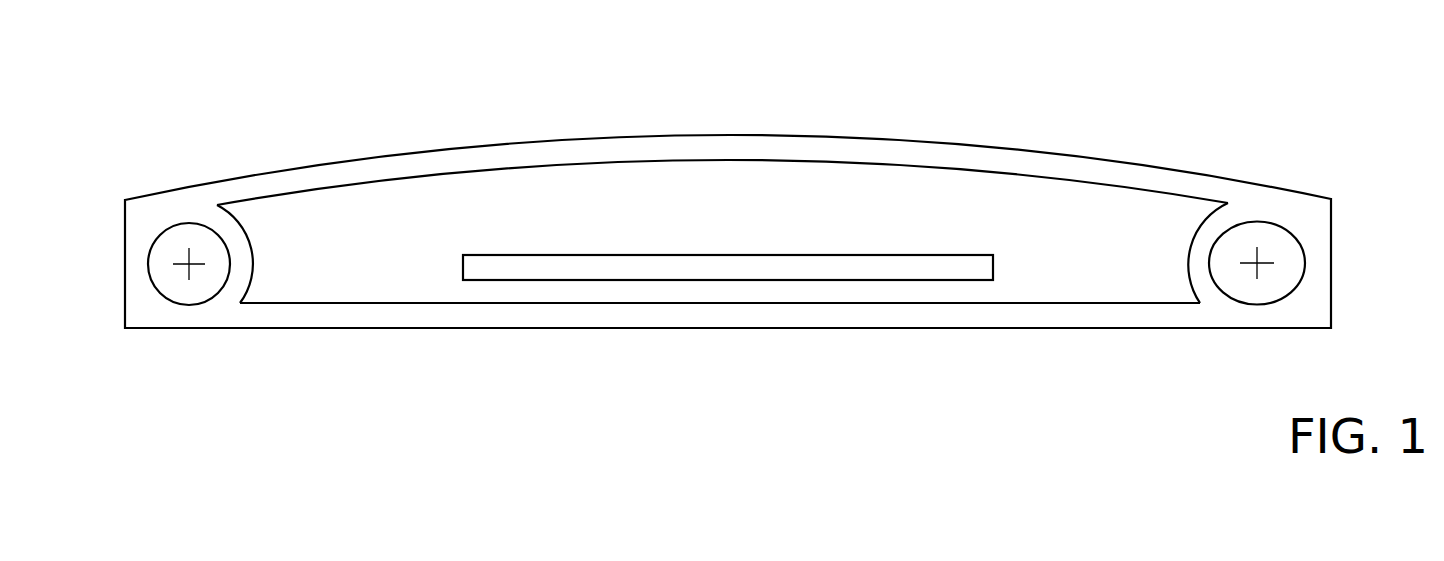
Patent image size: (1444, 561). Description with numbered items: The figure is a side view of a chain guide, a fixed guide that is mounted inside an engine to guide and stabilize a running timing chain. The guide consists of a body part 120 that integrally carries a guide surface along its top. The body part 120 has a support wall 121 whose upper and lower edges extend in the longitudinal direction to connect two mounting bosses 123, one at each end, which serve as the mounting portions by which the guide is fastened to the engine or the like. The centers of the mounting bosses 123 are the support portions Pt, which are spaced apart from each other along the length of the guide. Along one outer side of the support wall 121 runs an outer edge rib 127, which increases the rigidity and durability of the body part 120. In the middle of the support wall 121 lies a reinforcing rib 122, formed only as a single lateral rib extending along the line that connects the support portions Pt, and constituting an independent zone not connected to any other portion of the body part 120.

The body part 120 is at (187, 140).
The support wall 121 is at (397, 245).
The reinforcing rib 122 is at (683, 265).
The mounting boss 123 is at (240, 270).
The outer edge rib 127 is at (983, 158).
The support portion Pt is at (189, 265).